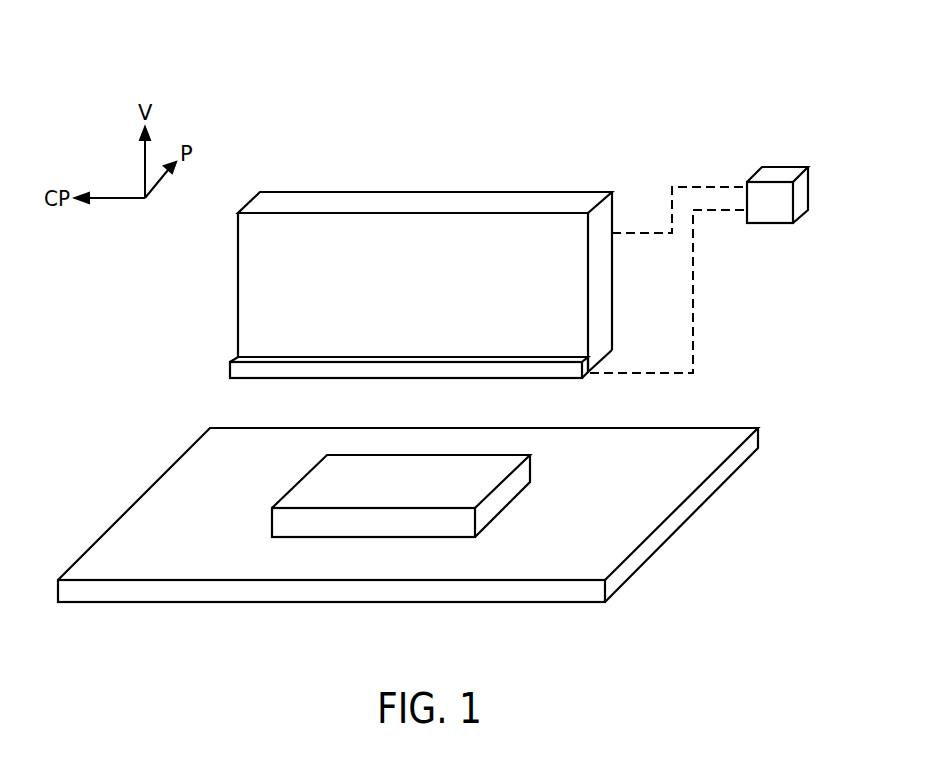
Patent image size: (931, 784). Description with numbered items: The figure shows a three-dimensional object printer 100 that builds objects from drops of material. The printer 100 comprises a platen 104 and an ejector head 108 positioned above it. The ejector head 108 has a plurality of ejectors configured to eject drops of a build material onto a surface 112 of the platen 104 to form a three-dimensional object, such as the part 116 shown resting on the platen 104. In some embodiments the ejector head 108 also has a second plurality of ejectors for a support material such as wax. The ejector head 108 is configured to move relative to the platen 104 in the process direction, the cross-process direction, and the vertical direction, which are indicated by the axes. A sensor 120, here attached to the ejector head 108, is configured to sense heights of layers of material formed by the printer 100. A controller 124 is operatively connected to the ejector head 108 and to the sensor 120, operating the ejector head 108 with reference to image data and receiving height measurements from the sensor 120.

The three-dimensional object printer 100 is at (218, 67).
The platen 104 is at (760, 443).
The ejector head 108 is at (548, 190).
The surface of the platen 112 is at (188, 482).
The part 116 is at (365, 470).
The sensor 120 is at (230, 370).
The controller 124 is at (777, 173).